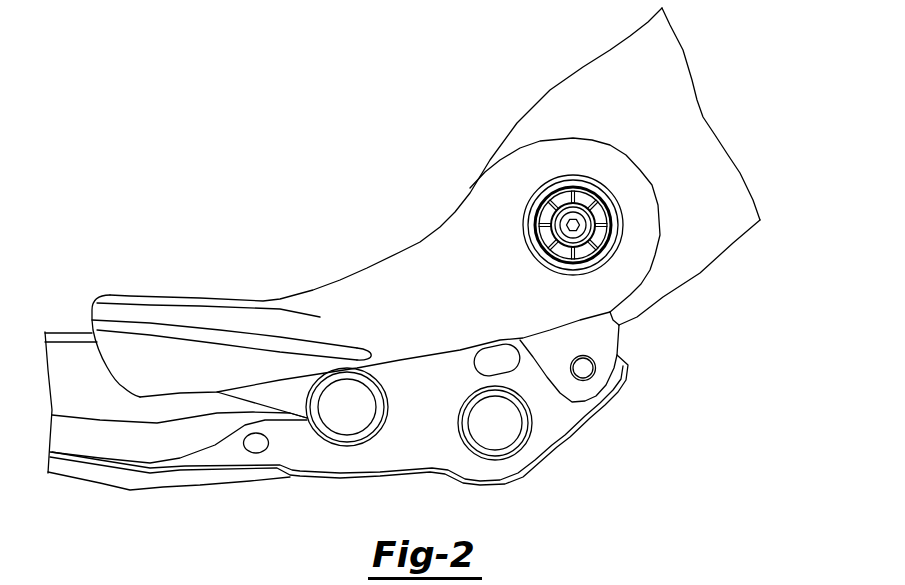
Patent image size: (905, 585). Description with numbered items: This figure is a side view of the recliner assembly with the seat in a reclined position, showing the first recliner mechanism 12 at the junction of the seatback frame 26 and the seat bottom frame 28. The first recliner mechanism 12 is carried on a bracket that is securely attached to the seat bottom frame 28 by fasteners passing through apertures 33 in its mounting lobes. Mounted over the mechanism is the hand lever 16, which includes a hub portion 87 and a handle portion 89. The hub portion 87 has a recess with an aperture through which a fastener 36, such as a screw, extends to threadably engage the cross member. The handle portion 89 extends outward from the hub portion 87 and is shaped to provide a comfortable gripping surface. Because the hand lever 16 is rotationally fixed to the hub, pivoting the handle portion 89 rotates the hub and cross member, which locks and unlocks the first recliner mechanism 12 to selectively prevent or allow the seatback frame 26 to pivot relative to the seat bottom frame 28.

The first recliner mechanism 12 is at (599, 410).
The hand lever 16 is at (364, 262).
The seatback frame 26 is at (653, 72).
The seat bottom frame 28 is at (163, 468).
The apertures 33 is at (596, 368).
The fastener 36 is at (566, 226).
The hub portion 87 is at (648, 208).
The handle portion 89 is at (172, 303).